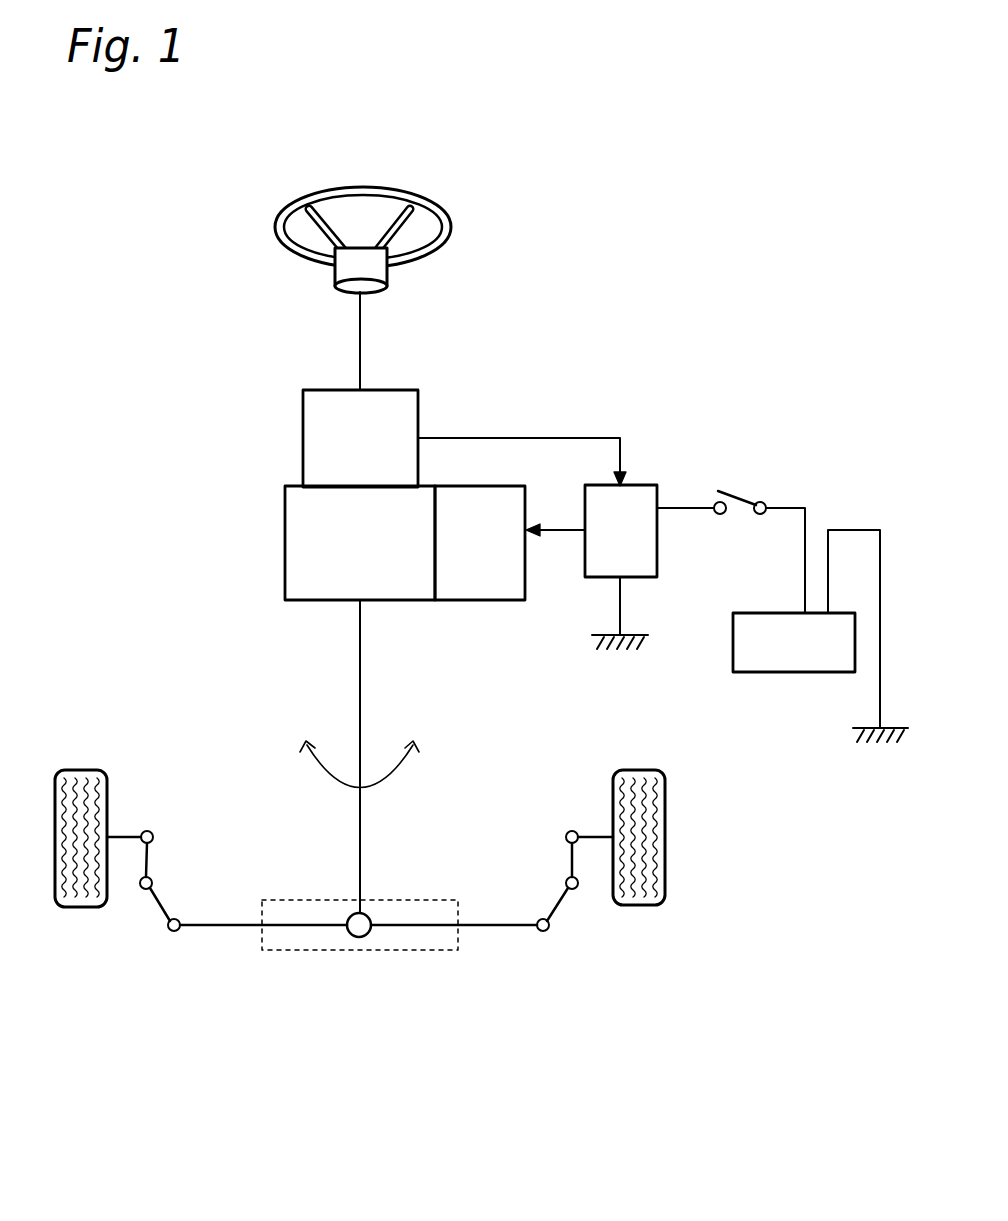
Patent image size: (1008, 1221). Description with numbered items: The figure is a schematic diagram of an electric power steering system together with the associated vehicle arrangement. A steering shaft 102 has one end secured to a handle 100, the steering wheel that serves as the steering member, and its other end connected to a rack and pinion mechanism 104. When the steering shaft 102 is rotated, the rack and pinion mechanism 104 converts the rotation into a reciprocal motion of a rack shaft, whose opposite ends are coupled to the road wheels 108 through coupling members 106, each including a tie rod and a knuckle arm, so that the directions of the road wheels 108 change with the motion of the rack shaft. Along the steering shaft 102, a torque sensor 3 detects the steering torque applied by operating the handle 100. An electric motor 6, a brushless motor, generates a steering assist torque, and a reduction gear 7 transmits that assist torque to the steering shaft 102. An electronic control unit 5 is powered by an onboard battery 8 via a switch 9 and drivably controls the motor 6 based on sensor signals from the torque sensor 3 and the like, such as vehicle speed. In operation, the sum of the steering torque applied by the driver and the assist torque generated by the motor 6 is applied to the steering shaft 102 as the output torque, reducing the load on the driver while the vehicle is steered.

The handle 100 is at (440, 203).
The steering shaft 102 is at (360, 335).
The torque sensor 3 is at (303, 440).
The reduction gear 7 is at (285, 525).
The electric motor 6 is at (528, 512).
The electronic control unit 5 is at (657, 540).
The switch 9 is at (762, 500).
The battery 8 is at (782, 672).
The rack and pinion mechanism 104 is at (325, 952).
The coupling members 106 is at (180, 893).
The road wheels 108 is at (75, 770).